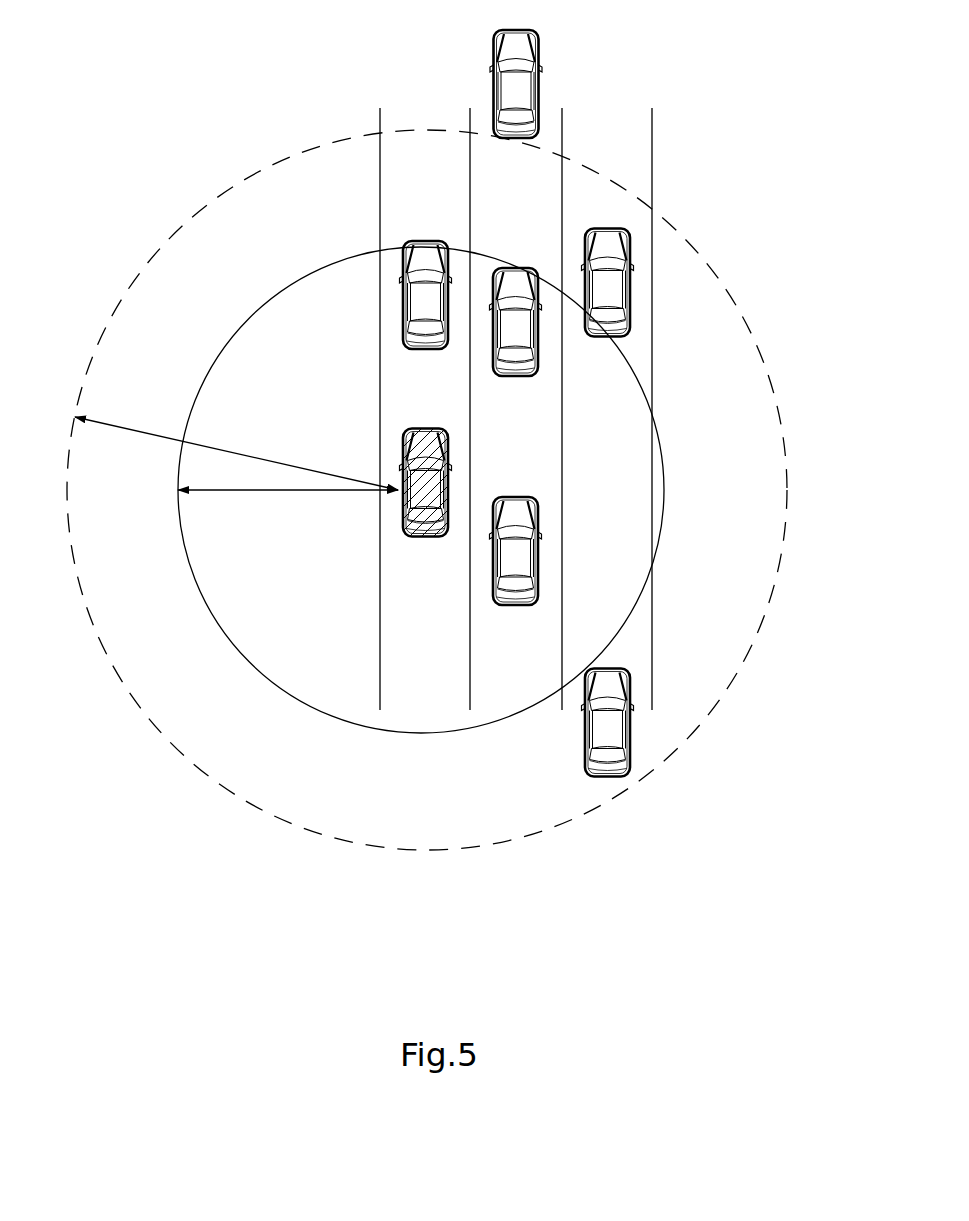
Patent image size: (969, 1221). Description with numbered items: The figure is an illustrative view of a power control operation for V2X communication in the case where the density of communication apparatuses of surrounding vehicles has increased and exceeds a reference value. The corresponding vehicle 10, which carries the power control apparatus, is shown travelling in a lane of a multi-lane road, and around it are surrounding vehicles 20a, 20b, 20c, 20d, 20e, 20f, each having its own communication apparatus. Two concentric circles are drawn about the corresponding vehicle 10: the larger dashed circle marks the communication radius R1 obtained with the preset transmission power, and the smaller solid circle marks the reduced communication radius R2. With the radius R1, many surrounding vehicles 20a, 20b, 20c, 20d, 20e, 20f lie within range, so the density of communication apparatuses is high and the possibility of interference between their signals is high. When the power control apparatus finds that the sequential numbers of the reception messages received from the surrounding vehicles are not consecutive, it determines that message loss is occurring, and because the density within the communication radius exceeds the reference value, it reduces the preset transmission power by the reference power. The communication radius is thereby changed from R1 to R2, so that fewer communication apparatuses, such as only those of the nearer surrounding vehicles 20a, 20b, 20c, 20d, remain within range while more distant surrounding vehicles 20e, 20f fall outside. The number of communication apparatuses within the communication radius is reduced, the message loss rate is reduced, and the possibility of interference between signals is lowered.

The corresponding vehicle 10 is at (425, 538).
The surrounding vehicle 20a is at (423, 241).
The surrounding vehicle 20b is at (516, 268).
The surrounding vehicle 20c is at (515, 497).
The surrounding vehicle 20d is at (630, 285).
The surrounding vehicle 20e is at (630, 733).
The surrounding vehicle 20f is at (538, 68).
The communication radius of preset transmission power R1 is at (236, 453).
The reduced communication radius R2 is at (288, 506).